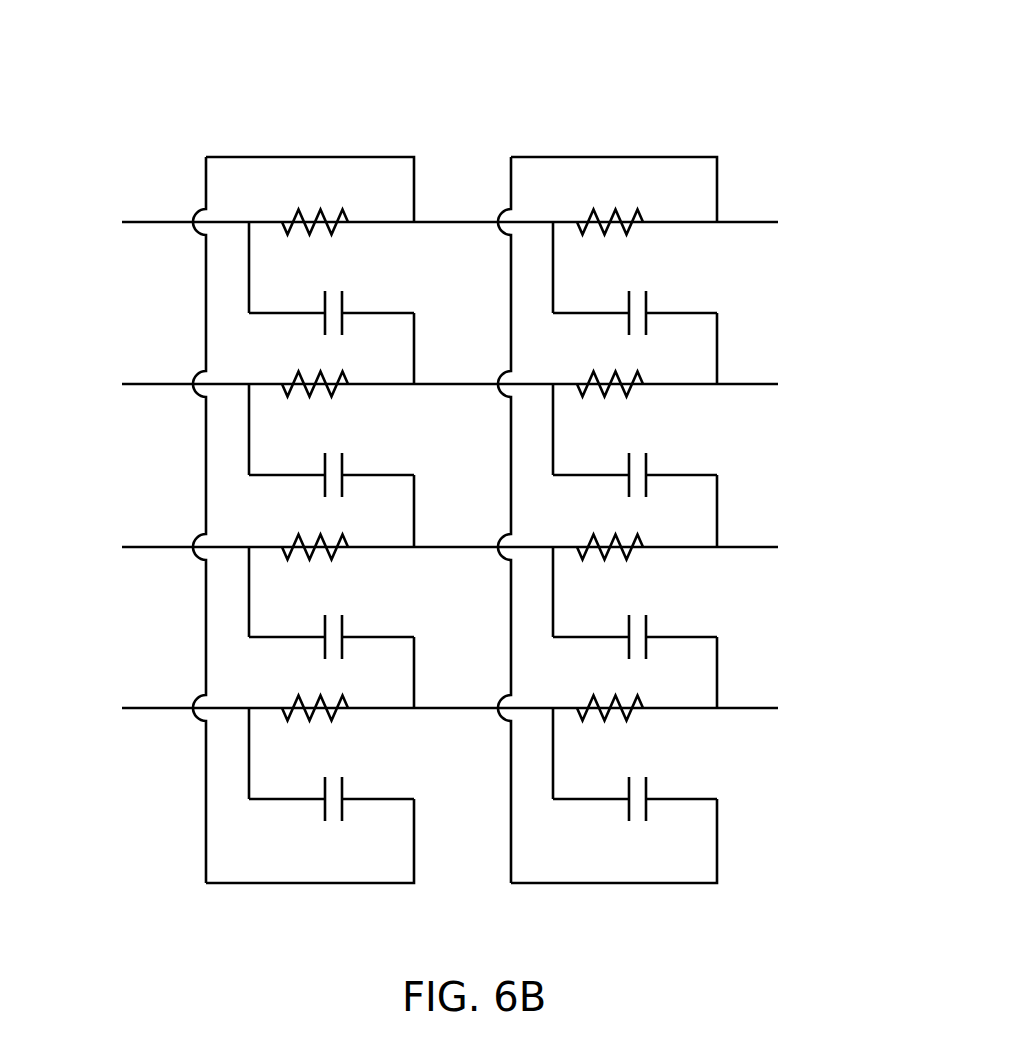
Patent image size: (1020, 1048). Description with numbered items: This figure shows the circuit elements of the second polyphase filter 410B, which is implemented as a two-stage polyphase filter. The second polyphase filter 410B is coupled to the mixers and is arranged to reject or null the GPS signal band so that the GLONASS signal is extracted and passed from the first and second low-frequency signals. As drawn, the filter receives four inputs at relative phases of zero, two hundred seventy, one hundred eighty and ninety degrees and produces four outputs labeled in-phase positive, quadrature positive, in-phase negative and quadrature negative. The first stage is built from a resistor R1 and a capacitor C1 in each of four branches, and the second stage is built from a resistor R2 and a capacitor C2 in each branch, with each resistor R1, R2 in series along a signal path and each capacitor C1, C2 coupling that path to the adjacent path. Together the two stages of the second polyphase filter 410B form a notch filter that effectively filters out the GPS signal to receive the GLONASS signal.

The second polyphase filter 410B is at (446, 449).
The first resistor R1 is at (315, 449).
The first capacitor C1 is at (331, 537).
The second resistor R2 is at (610, 449).
The second capacitor C2 is at (635, 537).